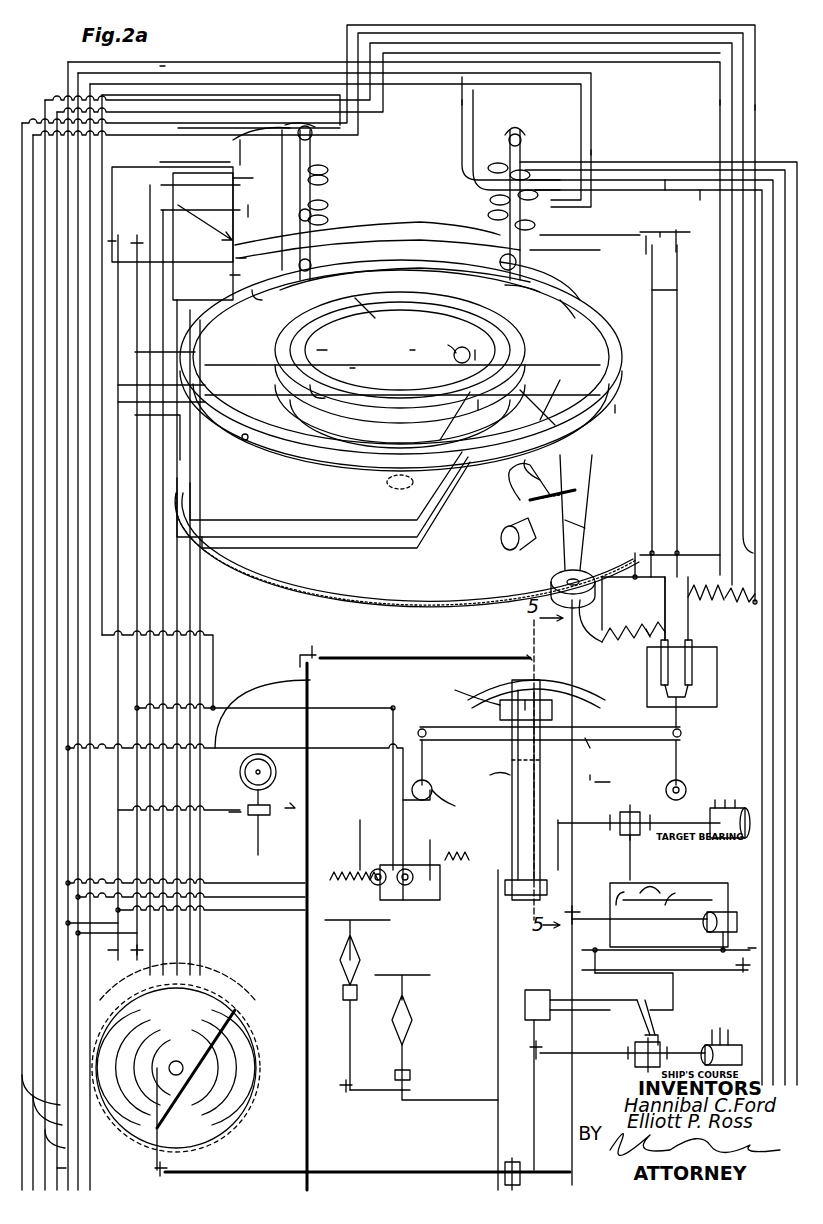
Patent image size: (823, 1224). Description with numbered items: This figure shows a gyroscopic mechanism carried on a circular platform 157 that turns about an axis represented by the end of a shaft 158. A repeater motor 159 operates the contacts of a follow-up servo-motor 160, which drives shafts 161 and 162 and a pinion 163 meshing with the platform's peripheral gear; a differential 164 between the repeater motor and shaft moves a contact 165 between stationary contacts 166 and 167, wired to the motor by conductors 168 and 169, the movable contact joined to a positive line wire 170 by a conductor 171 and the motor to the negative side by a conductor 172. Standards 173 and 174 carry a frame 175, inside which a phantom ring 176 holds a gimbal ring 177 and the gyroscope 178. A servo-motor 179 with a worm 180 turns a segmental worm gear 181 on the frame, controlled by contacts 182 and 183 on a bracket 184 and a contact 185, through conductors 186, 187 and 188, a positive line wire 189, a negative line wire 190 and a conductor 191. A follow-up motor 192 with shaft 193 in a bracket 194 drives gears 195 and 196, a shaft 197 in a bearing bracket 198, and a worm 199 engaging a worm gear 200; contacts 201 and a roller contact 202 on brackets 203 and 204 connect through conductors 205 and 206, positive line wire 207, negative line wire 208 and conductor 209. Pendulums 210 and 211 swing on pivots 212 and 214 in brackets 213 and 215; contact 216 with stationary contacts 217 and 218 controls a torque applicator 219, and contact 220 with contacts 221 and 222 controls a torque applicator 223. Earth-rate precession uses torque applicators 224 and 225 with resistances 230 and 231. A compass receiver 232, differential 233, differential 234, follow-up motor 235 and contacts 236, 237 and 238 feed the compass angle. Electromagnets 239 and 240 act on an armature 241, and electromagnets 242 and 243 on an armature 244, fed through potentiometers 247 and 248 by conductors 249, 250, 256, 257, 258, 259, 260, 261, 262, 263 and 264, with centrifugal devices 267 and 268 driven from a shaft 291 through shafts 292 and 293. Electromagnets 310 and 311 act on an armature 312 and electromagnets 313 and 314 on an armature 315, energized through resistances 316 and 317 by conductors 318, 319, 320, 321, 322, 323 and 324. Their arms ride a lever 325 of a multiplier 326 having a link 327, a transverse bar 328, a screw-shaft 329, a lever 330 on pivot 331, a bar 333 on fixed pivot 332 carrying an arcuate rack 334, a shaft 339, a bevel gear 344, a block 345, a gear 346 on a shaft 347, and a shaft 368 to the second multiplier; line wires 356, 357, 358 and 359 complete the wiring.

The platform 157 is at (355, 601).
The shaft 158 is at (402, 496).
The repeater motor 159 is at (750, 805).
The follow-up servo-motor 160 is at (745, 912).
The shaft 161 is at (630, 925).
The shaft 162 is at (572, 865).
The pinion 163 is at (645, 640).
The differential 164 is at (620, 816).
The movable electrical contact 165 is at (648, 857).
The stationary contact 166 is at (645, 893).
The stationary contact 167 is at (627, 905).
The conductor 168 is at (675, 871).
The conductor 169 is at (680, 905).
The positive line wire 170 is at (625, 977).
The conductor 171 is at (612, 893).
The conductor 172 is at (711, 938).
The standard 173 is at (399, 380).
The standard 174 is at (576, 515).
The frame 175 is at (236, 263).
The phantom ring 176 is at (470, 395).
The gimbal ring 177 is at (412, 405).
The gyroscope 178 is at (413, 448).
The follow-up servo-motor 179 is at (500, 540).
The worm 180 is at (600, 487).
The segmental worm gear 181 is at (555, 490).
The contact 182 is at (435, 344).
The contact 183 is at (486, 346).
The bracket 184 is at (542, 413).
The electrical contact 185 is at (448, 345).
The conductor 186 is at (620, 405).
The conductor 187 is at (590, 370).
The conductor 188 is at (600, 355).
The positive line wire 189 is at (677, 315).
The negative line wire 190 is at (677, 342).
The conductor 191 is at (675, 533).
The follow-up motor 192 is at (240, 143).
The shaft 193 is at (227, 180).
The bracket 194 is at (170, 162).
The gear 195 is at (220, 200).
The gear 196 is at (253, 213).
The shaft 197 is at (230, 243).
The bearing bracket 198 is at (230, 275).
The worm 199 is at (242, 322).
The segmental worm gear 200 is at (340, 349).
The contacts 201 is at (357, 368).
The roller contact 202 is at (395, 349).
The bracket 203 is at (325, 398).
The bracket 204 is at (323, 498).
The conductor 205 is at (161, 185).
The conductor 206 is at (161, 210).
The positive line wire 207 is at (138, 425).
The negative line wire 208 is at (136, 447).
The conductor 209 is at (170, 552).
The pendulum 210 is at (378, 258).
The pendulum 211 is at (540, 292).
The pivot 212 is at (312, 194).
The bracket 213 is at (281, 189).
The pivot 214 is at (503, 193).
The bracket 215 is at (525, 137).
The electrical contact 216 is at (343, 230).
The stationary contact 217 is at (252, 300).
The stationary contact 218 is at (320, 240).
The torque applicator 219 is at (575, 318).
The electrical contact 220 is at (502, 248).
The stationary electrical contact 221 is at (488, 210).
The stationary electrical contact 222 is at (568, 250).
The torque applicator 223 is at (360, 316).
The torque applicator 224 is at (285, 430).
The torque applicator 225 is at (509, 483).
The resistance 230 is at (140, 1005).
The resistance 231 is at (262, 804).
The compass receiver 232 is at (755, 1047).
The differential 233 is at (632, 1070).
The differential 234 is at (525, 1166).
The follow-up motor 235 is at (540, 1065).
The movable contact 236 is at (602, 1013).
The stationary contact 237 is at (638, 1013).
The stationary contact 238 is at (634, 991).
The electromagnet 239 is at (242, 124).
The electromagnet 240 is at (325, 165).
The armature 241 is at (330, 180).
The electromagnet 242 is at (590, 231).
The electromagnet 243 is at (488, 190).
The armature 244 is at (548, 228).
The potentiometer 247 is at (355, 838).
The potentiometer 248 is at (478, 905).
The conductor 249 is at (58, 1097).
The conductor 250 is at (66, 1117).
The conductor 256 is at (74, 1145).
The conductor 257 is at (80, 1169).
The conductor 258 is at (67, 73).
The conductor 259 is at (156, 66).
The conductor 260 is at (358, 752).
The conductor 261 is at (462, 107).
The conductor 262 is at (468, 108).
The conductor 263 is at (237, 710).
The conductor 264 is at (388, 731).
The centrifugal device 267 is at (418, 1025).
The centrifugal device 268 is at (362, 962).
The shaft 291 is at (498, 948).
The shaft 292 is at (446, 1080).
The shaft 293 is at (350, 1033).
The electromagnet 310 is at (240, 119).
The electromagnet 311 is at (330, 200).
The armature 312 is at (330, 220).
The electromagnet 313 is at (491, 154).
The electromagnet 314 is at (548, 192).
The armature 315 is at (526, 158).
The resistance 316 is at (722, 686).
The resistance 317 is at (636, 672).
The conductor 318 is at (380, 28).
The conductor 319 is at (343, 37).
The conductor 320 is at (722, 84).
The conductor 321 is at (760, 102).
The conductor 322 is at (620, 566).
The conductor 323 is at (753, 553).
The conductor 324 is at (697, 565).
The lever 325 is at (683, 753).
The multiplier 326 is at (613, 747).
The link 327 is at (549, 732).
The transverse bar 328 is at (459, 693).
The screw-shaft 329 is at (506, 698).
The lever 330 is at (427, 752).
The pivot 331 is at (458, 806).
The fixed pivot 332 is at (602, 780).
The bar 333 is at (570, 702).
The arcuate rack 334 is at (477, 680).
The shaft 339 is at (558, 840).
The bevel gear 344 is at (510, 785).
The pivoted block 345 is at (520, 770).
The gear 346 is at (510, 647).
The shaft 347 is at (415, 651).
The lead 356 is at (628, 162).
The lead 357 is at (683, 170).
The lead 358 is at (700, 198).
The lead 359 is at (684, 213).
The shaft 368 is at (308, 1133).